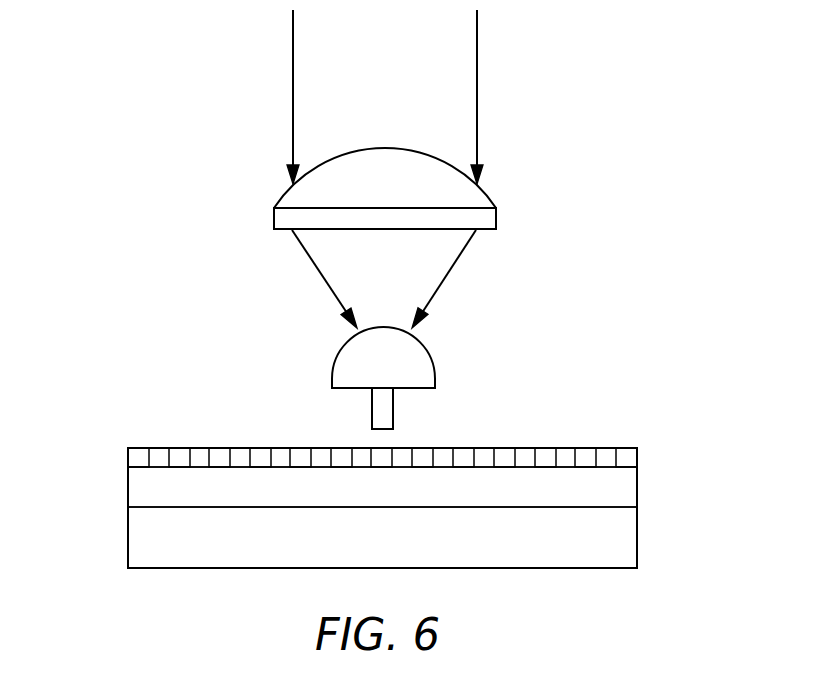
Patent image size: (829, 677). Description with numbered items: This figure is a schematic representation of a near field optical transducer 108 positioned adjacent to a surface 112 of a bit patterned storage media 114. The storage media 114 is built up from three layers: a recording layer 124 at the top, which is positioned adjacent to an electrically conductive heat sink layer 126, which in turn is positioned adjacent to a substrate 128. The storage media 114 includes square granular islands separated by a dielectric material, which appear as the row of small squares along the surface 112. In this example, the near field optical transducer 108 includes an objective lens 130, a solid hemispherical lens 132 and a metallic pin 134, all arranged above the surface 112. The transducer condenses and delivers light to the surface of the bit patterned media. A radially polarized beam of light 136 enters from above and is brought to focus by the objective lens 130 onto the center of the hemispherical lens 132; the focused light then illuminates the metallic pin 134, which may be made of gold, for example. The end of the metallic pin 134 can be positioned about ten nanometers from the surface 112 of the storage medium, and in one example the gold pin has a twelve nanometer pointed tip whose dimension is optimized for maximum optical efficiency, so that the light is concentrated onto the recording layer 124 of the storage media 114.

The near field optical transducer 108 is at (596, 247).
The surface 112 is at (262, 456).
The bit patterned storage media 114 is at (670, 497).
The recording layer 124 is at (670, 446).
The electrically conductive heat sink layer 126 is at (143, 492).
The substrate 128 is at (143, 543).
The objective lens 130 is at (483, 200).
The solid hemispherical lens 132 is at (430, 356).
The metallic pin 134 is at (385, 418).
The radially polarized beam of light 136 is at (478, 88).